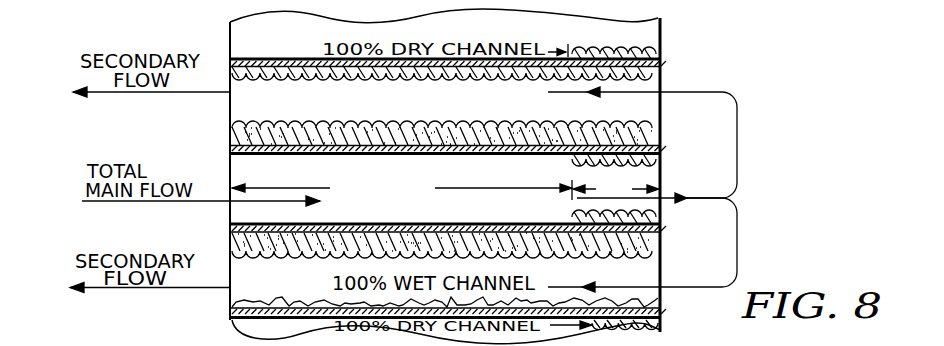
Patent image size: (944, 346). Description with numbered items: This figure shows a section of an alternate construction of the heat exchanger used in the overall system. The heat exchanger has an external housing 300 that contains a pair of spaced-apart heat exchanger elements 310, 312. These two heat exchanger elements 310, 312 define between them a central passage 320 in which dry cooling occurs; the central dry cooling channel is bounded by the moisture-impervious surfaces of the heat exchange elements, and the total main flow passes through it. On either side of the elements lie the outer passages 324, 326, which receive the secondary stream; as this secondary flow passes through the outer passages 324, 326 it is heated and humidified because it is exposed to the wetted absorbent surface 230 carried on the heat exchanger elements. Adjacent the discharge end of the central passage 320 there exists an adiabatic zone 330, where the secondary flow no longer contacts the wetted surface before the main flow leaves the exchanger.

The external housing 300 is at (576, 50).
The wetted absorbent surface 230 is at (660, 130).
The heat exchanger element 310 is at (660, 155).
The heat exchanger element 312 is at (660, 238).
The outer passage 326 is at (660, 305).
The adiabatic zone 330 is at (616, 190).
The outer passage 324 is at (532, 118).
The central passage 320 is at (537, 220).